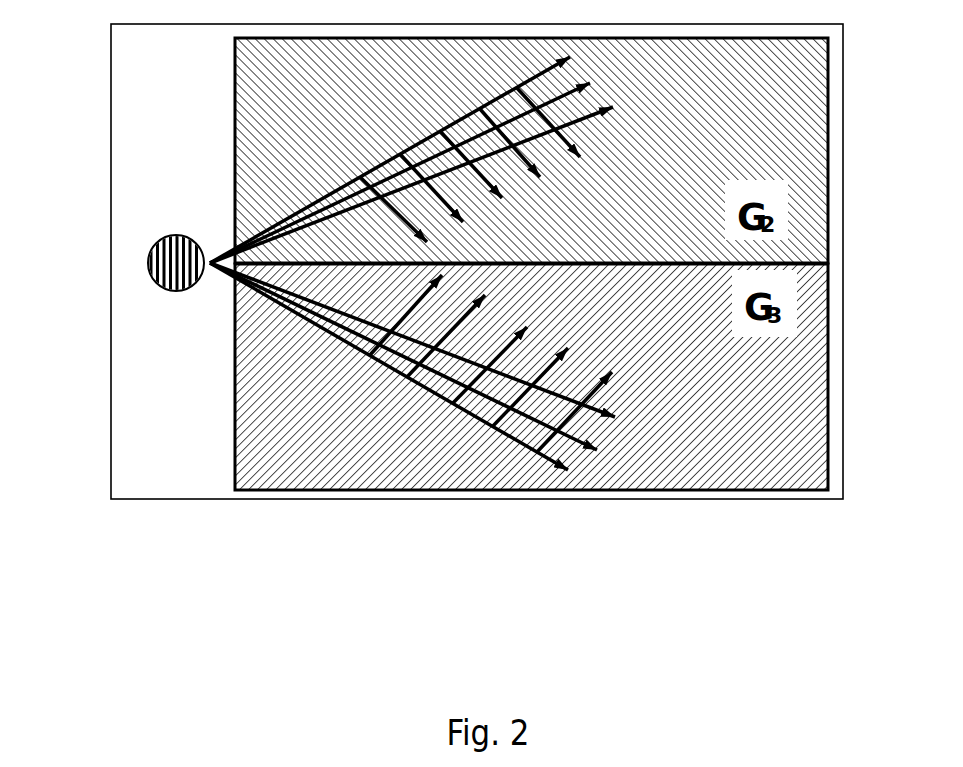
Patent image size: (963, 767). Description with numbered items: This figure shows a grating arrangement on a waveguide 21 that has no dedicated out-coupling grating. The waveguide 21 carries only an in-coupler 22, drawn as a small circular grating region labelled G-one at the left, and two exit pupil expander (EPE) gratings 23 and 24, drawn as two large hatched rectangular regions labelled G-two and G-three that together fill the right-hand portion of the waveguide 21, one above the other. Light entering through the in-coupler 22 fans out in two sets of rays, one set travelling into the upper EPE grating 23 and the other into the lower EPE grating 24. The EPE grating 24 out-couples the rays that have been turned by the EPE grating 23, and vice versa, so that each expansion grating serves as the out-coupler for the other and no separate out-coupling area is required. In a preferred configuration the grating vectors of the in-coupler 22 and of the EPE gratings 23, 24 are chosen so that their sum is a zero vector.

The waveguide 21 is at (147, 505).
The in-coupler 22 is at (173, 293).
The EPE grating 23 is at (793, 137).
The EPE grating 24 is at (755, 453).